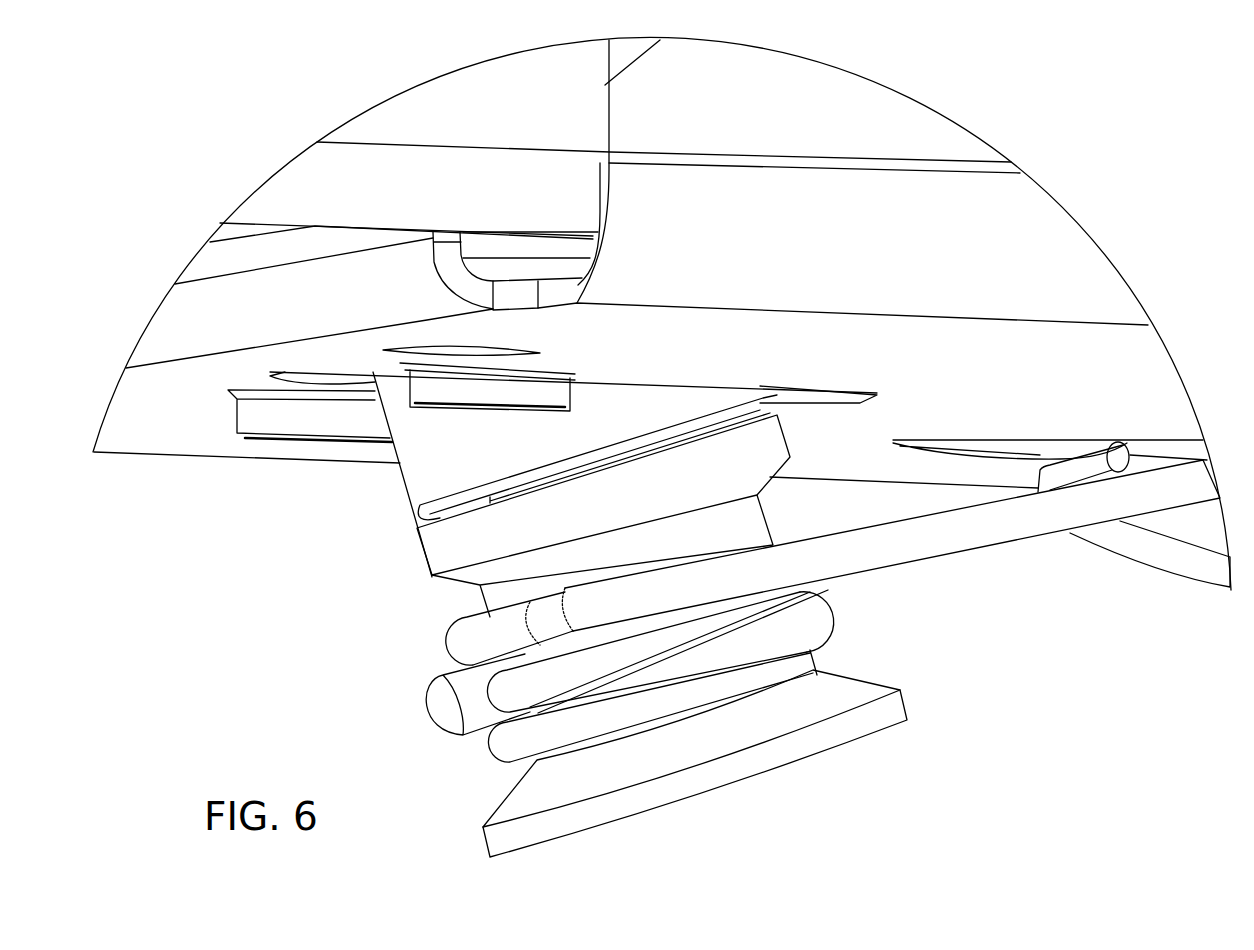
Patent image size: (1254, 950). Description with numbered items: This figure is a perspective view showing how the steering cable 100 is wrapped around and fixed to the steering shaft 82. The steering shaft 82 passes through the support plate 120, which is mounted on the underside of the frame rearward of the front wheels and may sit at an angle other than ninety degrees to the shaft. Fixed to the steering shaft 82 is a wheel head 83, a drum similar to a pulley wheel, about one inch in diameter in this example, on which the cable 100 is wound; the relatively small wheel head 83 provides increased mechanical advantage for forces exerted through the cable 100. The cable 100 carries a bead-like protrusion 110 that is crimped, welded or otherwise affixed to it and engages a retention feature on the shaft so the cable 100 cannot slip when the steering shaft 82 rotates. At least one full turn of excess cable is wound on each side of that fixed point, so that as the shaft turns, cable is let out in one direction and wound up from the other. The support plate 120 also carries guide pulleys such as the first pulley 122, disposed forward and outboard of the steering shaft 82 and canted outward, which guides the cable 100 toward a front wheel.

The support plate 120 is at (1047, 342).
The steering shaft 82 is at (425, 452).
The cable 100 is at (1050, 513).
The first pulley 122 is at (1162, 558).
The protrusion 110 is at (463, 700).
The wheel head 83 is at (860, 730).